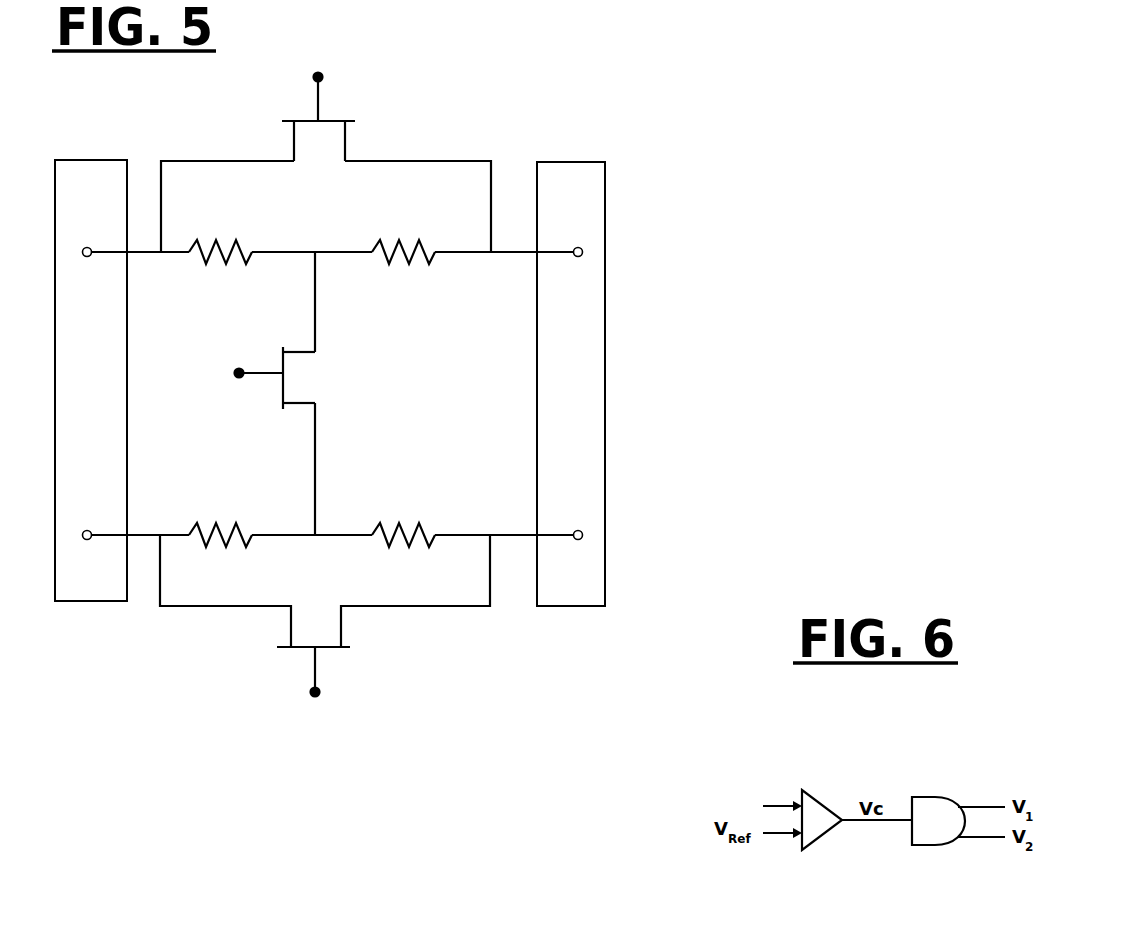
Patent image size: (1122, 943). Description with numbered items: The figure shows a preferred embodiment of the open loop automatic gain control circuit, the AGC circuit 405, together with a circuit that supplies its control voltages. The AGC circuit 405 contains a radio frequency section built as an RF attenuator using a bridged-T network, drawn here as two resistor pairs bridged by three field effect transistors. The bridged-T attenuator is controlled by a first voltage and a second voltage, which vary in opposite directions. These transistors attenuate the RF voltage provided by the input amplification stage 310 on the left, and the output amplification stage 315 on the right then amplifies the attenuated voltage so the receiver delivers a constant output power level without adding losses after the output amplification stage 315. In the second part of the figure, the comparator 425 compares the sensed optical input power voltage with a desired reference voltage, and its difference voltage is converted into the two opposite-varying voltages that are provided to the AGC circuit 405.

In FIG. 5, the input amplification stage 310 is at (83, 160).
In FIG. 5, the output amplification stage 315 is at (567, 162).
In FIG. 5, the AGC circuit 405 is at (655, 61).
In FIG. 6, the comparator 425 is at (818, 801).